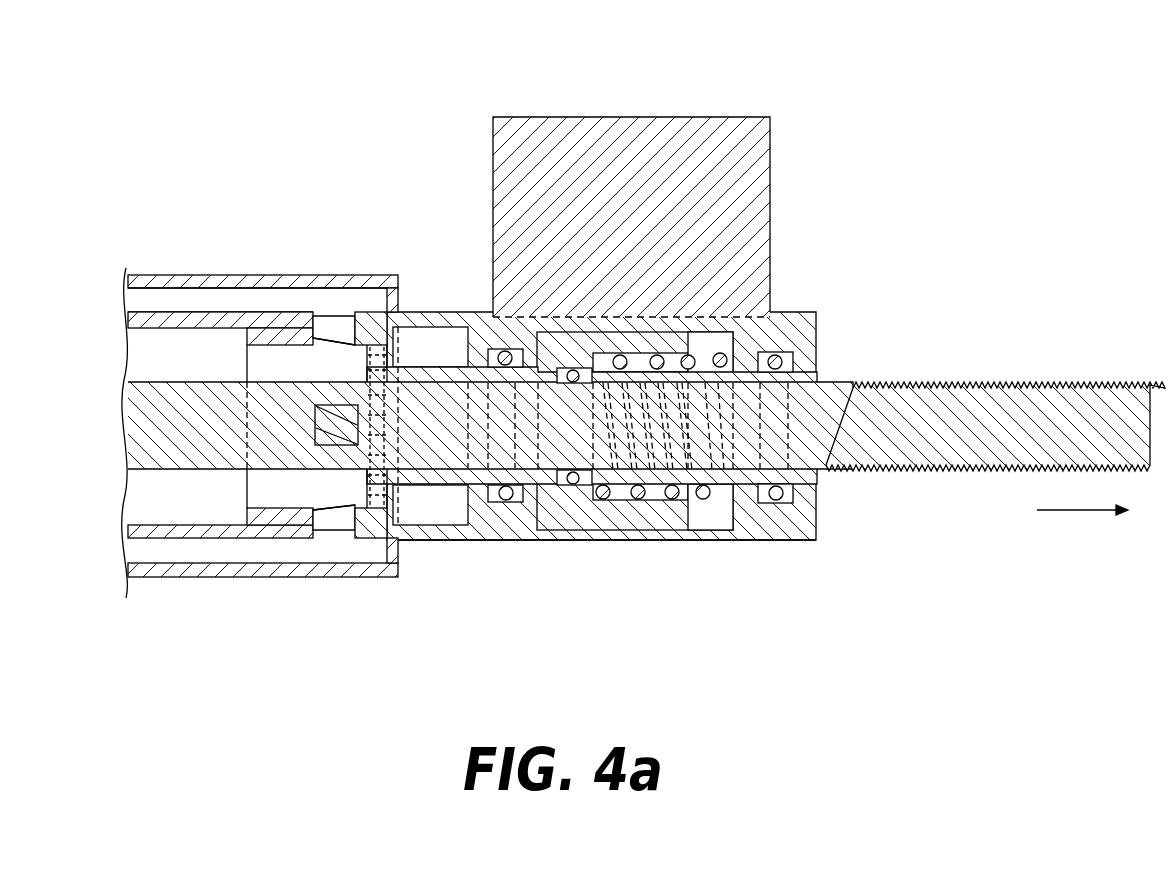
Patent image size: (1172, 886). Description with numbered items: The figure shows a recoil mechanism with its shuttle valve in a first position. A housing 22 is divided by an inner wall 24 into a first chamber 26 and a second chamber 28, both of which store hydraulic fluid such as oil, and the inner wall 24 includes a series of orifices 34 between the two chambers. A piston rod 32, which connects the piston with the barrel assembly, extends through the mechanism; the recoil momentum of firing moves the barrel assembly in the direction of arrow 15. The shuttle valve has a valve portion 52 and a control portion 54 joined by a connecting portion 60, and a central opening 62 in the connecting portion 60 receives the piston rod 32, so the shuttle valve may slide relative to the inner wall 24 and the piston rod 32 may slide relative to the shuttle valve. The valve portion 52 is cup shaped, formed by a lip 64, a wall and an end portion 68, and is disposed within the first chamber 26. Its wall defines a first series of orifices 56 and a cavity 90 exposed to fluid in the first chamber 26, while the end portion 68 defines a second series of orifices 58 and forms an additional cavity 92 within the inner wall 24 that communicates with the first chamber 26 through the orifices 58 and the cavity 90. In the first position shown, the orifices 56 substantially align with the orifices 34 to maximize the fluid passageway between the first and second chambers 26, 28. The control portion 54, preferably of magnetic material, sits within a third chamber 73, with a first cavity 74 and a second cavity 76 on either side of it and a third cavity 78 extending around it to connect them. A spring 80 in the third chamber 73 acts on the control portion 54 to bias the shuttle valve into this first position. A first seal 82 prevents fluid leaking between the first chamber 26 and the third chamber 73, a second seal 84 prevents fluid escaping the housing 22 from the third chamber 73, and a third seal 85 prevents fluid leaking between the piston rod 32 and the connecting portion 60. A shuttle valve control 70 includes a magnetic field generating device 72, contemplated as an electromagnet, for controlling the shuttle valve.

The arrow 15 is at (1085, 510).
The housing 22 is at (163, 278).
The inner wall 24 is at (217, 320).
The first chamber 26 is at (138, 513).
The second chamber 28 is at (140, 297).
The piston rod 32 is at (835, 462).
The orifices 34 is at (322, 320).
The valve portion 52 is at (252, 522).
The control portion 54 is at (588, 515).
The first series of orifices 56 is at (330, 333).
The second series of orifices 58 is at (390, 530).
The connecting portion 60 is at (462, 449).
The central opening 62 is at (807, 378).
The lip 64 is at (247, 333).
The end portion 68 is at (367, 518).
The shuttle valve control 70 is at (917, 96).
The magnetic field generating device 72 is at (757, 145).
The third chamber 73 is at (735, 510).
The first cavity 74 is at (713, 520).
The second cavity 76 is at (540, 523).
The third cavity 78 is at (650, 530).
The spring 80 is at (722, 352).
The first seal 82 is at (503, 350).
The second seal 84 is at (787, 352).
The third seal 85 is at (582, 487).
The cavity 90 is at (285, 500).
The additional cavity 92 is at (440, 332).